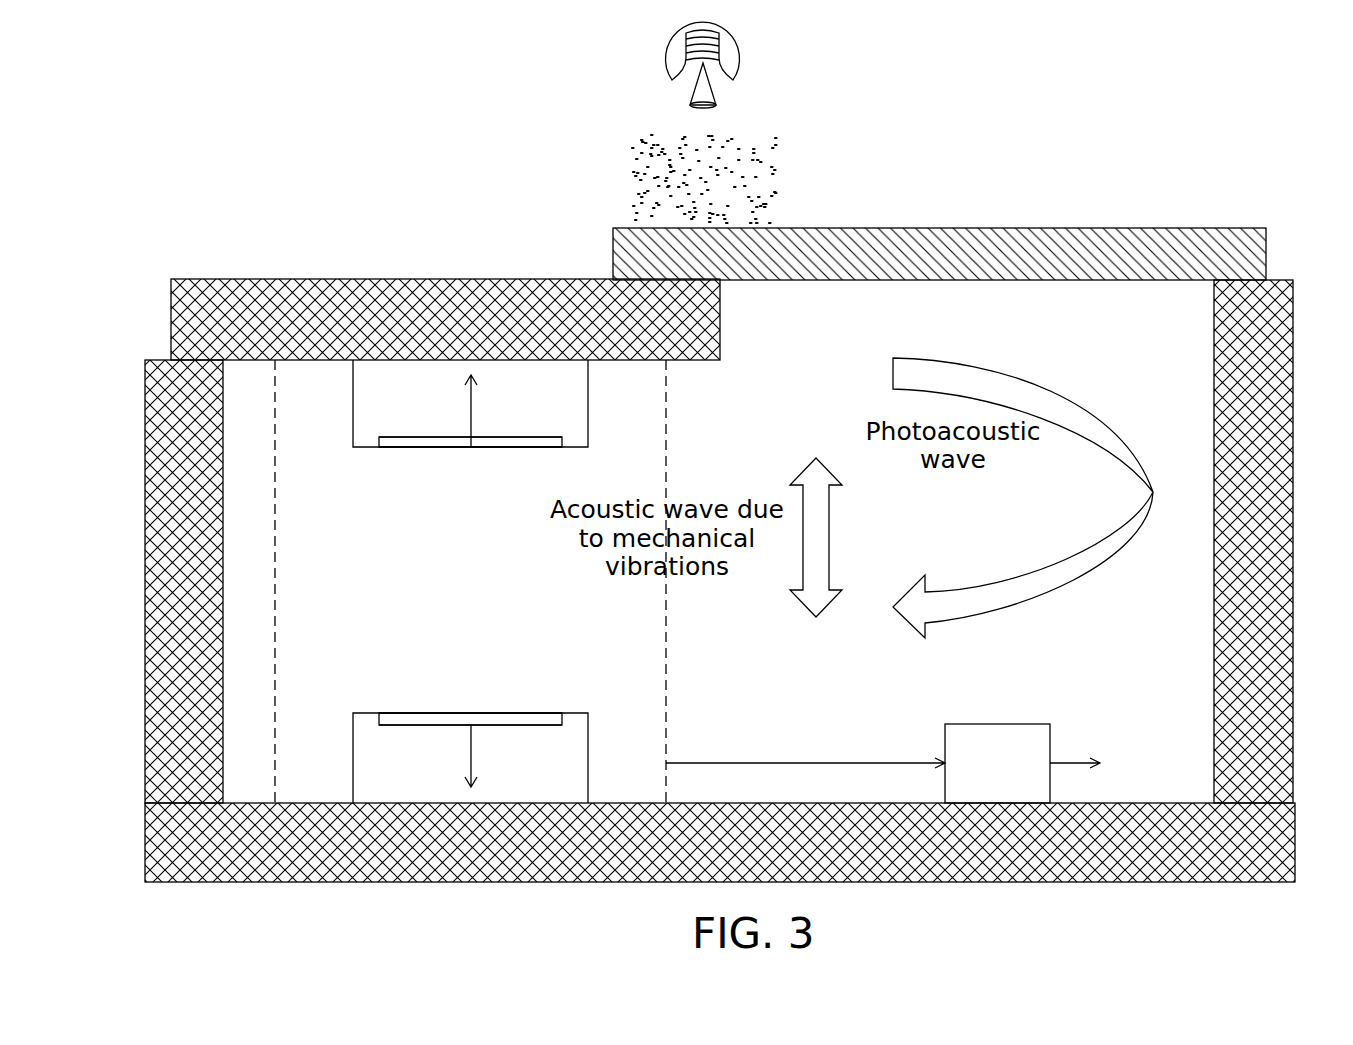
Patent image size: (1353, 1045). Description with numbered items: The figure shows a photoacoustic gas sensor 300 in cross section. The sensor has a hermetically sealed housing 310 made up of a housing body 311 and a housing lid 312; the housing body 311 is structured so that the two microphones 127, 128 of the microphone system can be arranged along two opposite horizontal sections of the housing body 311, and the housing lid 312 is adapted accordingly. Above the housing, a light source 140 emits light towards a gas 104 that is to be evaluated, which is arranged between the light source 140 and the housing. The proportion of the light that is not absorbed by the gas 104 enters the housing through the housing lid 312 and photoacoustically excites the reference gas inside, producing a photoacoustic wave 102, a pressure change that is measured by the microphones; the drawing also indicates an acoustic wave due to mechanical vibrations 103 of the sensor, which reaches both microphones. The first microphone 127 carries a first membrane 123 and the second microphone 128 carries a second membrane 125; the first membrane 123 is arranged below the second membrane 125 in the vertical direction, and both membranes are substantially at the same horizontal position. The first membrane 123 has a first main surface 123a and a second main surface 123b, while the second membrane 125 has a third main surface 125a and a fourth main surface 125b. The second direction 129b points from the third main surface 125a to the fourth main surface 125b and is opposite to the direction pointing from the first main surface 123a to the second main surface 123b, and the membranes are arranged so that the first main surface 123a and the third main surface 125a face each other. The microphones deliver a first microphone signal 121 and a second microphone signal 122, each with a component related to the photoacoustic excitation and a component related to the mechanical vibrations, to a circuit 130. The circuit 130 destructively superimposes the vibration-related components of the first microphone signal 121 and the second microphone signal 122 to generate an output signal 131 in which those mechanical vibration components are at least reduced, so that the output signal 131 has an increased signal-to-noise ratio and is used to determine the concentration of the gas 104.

The photoacoustic gas sensor 300 is at (228, 163).
The hermetically sealed housing 310 is at (1192, 882).
The housing body 311 is at (1082, 858).
The housing lid 312 is at (1012, 230).
The light source 140 is at (735, 82).
The gas 104 is at (773, 155).
The photoacoustic wave 102 is at (666, 448).
The acoustic wave due to mechanical vibrations 103 is at (829, 554).
The second microphone 128 is at (588, 420).
The second membrane 125 is at (495, 448).
The third main surface 125a is at (412, 448).
The fourth main surface 125b is at (428, 435).
The second direction 129b is at (471, 396).
The first microphone 127 is at (588, 750).
The first membrane 123 is at (560, 713).
The first main surface 123a is at (412, 713).
The second main surface 123b is at (427, 726).
The first microphone signal 121 is at (805, 743).
The second microphone signal 122 is at (900, 760).
The circuit 130 is at (997, 763).
The output signal 131 is at (1103, 764).